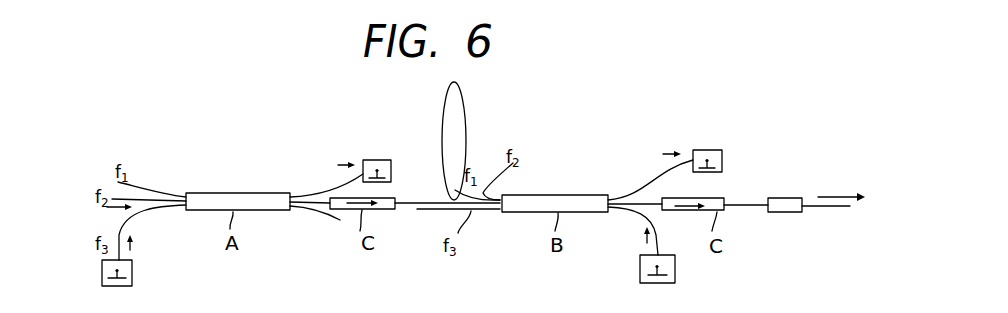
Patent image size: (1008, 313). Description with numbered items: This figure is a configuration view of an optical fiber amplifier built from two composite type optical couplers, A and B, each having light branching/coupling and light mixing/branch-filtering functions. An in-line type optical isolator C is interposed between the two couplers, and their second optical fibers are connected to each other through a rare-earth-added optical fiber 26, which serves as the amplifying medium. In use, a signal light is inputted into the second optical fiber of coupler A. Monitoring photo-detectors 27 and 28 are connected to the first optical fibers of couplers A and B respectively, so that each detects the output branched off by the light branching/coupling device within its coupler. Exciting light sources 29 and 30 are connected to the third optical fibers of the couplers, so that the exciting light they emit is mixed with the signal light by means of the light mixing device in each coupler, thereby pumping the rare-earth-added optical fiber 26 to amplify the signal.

The rare-earth-added optical fiber 26 is at (472, 111).
The monitoring photo-detector 27 is at (382, 160).
The monitoring photo-detector 28 is at (712, 150).
The exciting light source 29 is at (132, 276).
The exciting light source 30 is at (675, 272).